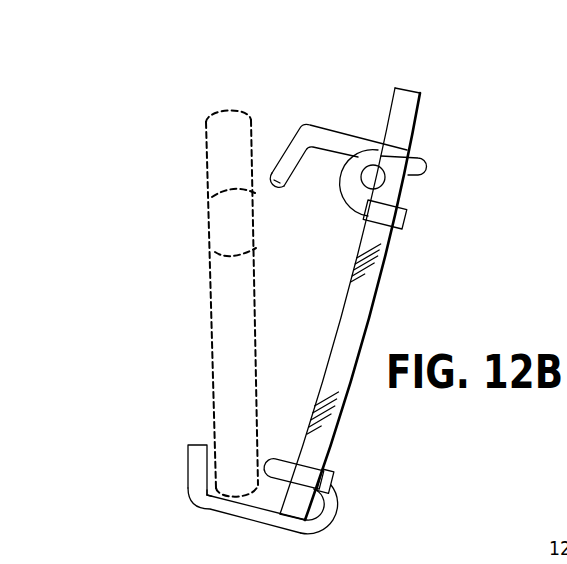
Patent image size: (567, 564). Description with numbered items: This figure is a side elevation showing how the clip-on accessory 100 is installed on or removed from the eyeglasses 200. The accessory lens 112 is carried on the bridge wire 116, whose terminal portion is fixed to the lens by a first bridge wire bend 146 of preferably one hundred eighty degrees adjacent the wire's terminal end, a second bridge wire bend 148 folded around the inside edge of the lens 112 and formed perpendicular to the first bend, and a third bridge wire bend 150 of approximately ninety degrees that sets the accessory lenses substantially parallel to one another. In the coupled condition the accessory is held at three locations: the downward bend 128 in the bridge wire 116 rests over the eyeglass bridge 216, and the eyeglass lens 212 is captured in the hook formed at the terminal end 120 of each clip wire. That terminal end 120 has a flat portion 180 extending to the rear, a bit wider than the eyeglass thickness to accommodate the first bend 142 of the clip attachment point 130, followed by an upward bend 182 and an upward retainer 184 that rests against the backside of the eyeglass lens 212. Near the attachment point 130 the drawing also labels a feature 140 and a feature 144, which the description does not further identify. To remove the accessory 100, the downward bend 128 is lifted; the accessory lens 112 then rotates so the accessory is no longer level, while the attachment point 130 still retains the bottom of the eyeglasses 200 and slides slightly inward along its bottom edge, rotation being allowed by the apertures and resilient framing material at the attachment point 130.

The clip-on accessory 100 is at (382, 297).
The lens 112 is at (378, 290).
The bridge wire 116 is at (342, 122).
The terminal end 120 is at (198, 499).
The downward bend 128 is at (277, 192).
The clip attachment point 130 is at (352, 497).
The collar tab 140 is at (334, 468).
The first bend 142 is at (273, 458).
The curved retainer end 144 is at (336, 524).
The first bridge wire bend 146 is at (342, 190).
The second bridge wire bend 148 is at (433, 166).
The third bridge wire bend 150 is at (337, 159).
The flat portion 180 is at (268, 537).
The upward bend 182 is at (216, 488).
The upward retainer 184 is at (188, 470).
The eyeglasses 200 is at (198, 291).
The eyeglass lens 212 is at (215, 328).
The eyeglass bridge 216 is at (214, 268).